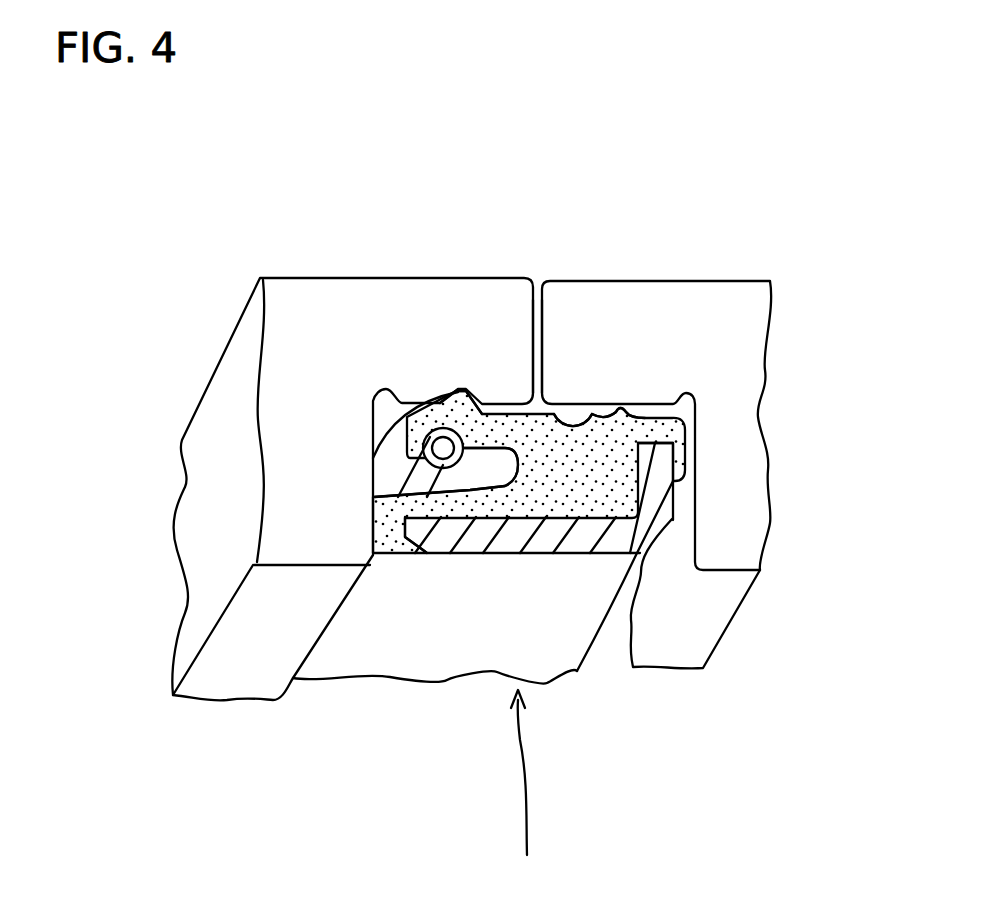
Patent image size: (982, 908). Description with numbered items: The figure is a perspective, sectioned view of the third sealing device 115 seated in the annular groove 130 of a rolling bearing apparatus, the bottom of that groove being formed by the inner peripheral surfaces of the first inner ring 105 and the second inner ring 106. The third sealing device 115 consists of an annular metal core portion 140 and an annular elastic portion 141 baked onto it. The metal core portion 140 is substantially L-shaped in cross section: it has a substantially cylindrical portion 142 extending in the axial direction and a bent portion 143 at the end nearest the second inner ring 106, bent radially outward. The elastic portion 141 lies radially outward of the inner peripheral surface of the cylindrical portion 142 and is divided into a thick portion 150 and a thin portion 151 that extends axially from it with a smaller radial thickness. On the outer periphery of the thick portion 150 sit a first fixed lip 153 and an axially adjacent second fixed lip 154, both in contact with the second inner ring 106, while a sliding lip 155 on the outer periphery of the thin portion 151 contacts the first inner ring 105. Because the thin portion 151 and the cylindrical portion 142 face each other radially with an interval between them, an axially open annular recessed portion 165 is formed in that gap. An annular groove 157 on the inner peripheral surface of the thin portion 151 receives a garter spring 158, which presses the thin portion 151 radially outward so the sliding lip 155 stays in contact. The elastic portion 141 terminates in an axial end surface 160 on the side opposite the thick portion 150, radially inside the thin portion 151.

The first inner ring 105 is at (312, 489).
The second inner ring 106 is at (723, 370).
The third sealing device 115 is at (527, 786).
The annular groove 130 is at (543, 400).
The metal core portion 140 is at (578, 615).
The elastic portion 141 is at (537, 543).
The cylindrical portion 142 is at (452, 543).
The bent portion 143 is at (660, 513).
The thick portion 150 is at (417, 352).
The thin portion 151 is at (473, 432).
The first fixed lip 153 is at (573, 398).
The second fixed lip 154 is at (618, 403).
The sliding lip 155 is at (458, 392).
The annular groove 157 is at (375, 458).
The garter spring 158 is at (462, 464).
The axial end surface 160 is at (340, 602).
The annular recessed portion 165 is at (497, 446).